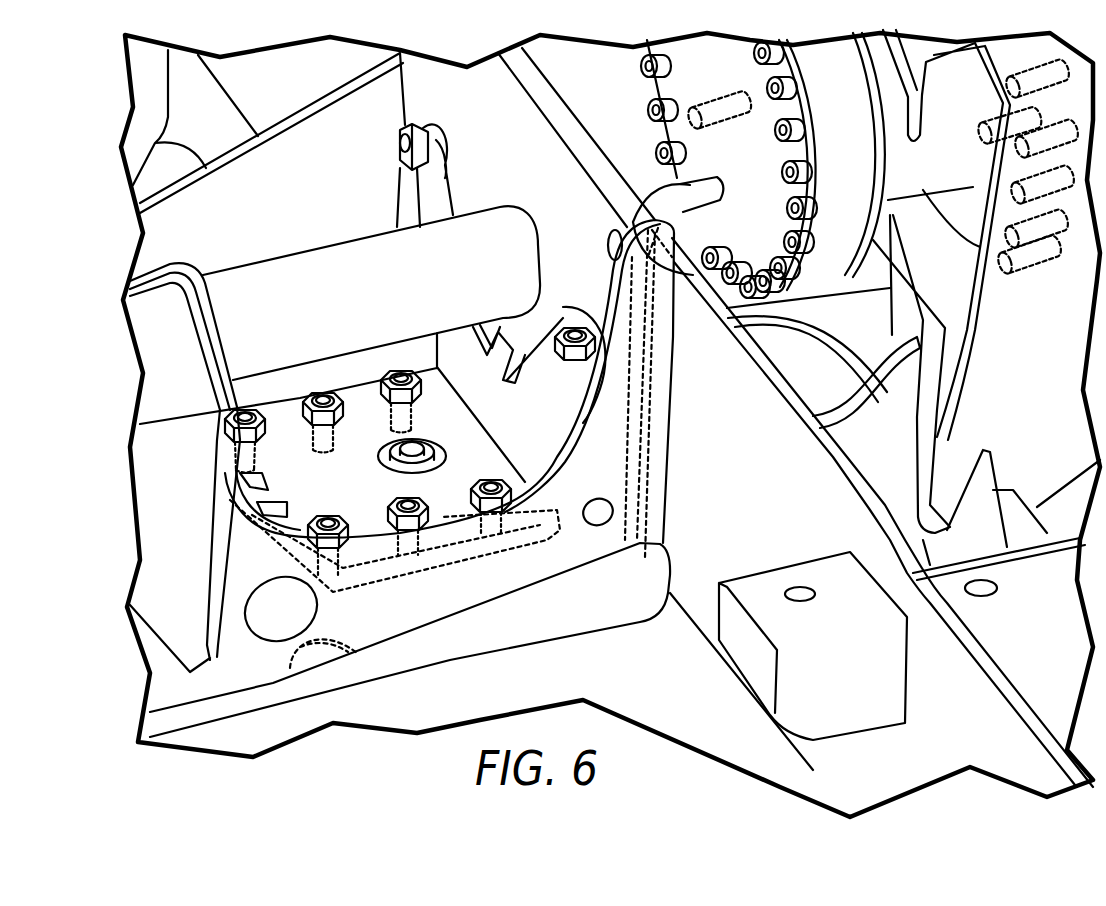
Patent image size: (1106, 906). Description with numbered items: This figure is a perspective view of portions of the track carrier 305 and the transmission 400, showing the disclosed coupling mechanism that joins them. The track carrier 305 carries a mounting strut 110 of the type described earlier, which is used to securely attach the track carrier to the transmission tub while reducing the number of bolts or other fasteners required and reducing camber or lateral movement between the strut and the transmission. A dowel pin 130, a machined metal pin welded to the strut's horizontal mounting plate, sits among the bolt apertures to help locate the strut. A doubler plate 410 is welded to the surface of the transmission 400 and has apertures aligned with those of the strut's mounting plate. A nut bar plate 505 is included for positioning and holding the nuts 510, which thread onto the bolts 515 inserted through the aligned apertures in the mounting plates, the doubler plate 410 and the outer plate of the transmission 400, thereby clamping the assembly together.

The mounting strut 110 is at (893, 430).
The dowel pin 130 is at (437, 467).
The track carrier 305 is at (868, 152).
The transmission 400 is at (518, 172).
The doubler plate 410 is at (530, 537).
The nut bar plate 505 is at (558, 423).
The nuts 510 is at (338, 524).
The bolts 515 is at (340, 560).